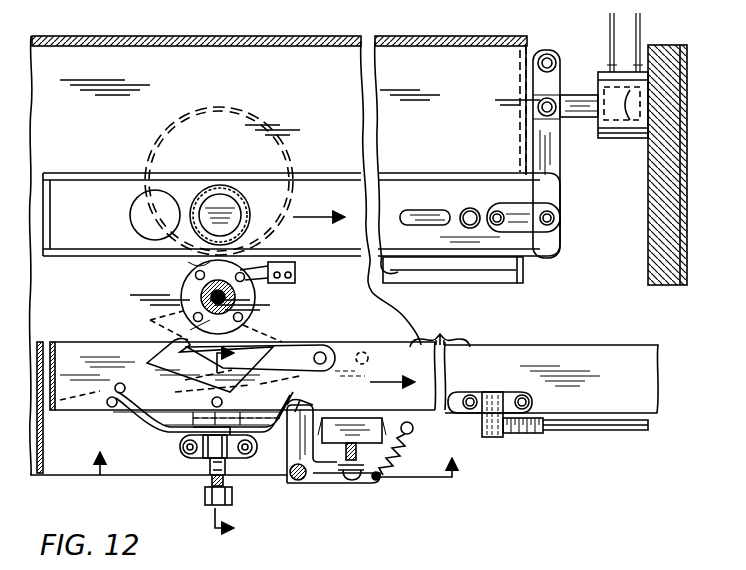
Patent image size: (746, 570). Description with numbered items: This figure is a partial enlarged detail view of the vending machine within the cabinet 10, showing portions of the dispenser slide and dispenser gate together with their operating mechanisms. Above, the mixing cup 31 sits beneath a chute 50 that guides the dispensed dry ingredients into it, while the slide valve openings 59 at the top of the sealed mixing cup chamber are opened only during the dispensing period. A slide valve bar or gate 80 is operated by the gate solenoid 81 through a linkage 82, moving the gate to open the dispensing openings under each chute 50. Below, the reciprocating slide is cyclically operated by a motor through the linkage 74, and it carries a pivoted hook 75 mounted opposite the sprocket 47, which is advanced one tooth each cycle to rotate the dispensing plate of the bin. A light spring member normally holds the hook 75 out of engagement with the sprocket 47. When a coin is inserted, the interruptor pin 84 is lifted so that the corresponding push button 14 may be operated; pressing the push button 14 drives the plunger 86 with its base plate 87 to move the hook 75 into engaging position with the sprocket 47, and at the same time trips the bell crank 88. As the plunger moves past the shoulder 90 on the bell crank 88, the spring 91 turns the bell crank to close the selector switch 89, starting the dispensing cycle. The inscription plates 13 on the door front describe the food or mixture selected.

The cabinet 10 is at (650, 212).
The inscription plates 13 is at (241, 441).
The push buttons 14 is at (205, 502).
The mixing cup 31 is at (251, 105).
The sprocket 47 is at (253, 297).
The chute 50 is at (247, 212).
The slide valve openings 59 is at (145, 228).
The linkage 74 is at (617, 427).
The pivoted hook 75 is at (170, 353).
The slide valve bar or gate 80 is at (404, 190).
The gate solenoid 81 is at (630, 120).
The linkage 82 is at (557, 140).
The interruptor pin 84 is at (210, 480).
The plunger 86 is at (210, 466).
The base plate 87 is at (268, 437).
The bell crank 88 is at (330, 485).
The selector switch 89 is at (360, 420).
The shoulder 90 is at (310, 422).
The spring 91 is at (400, 460).